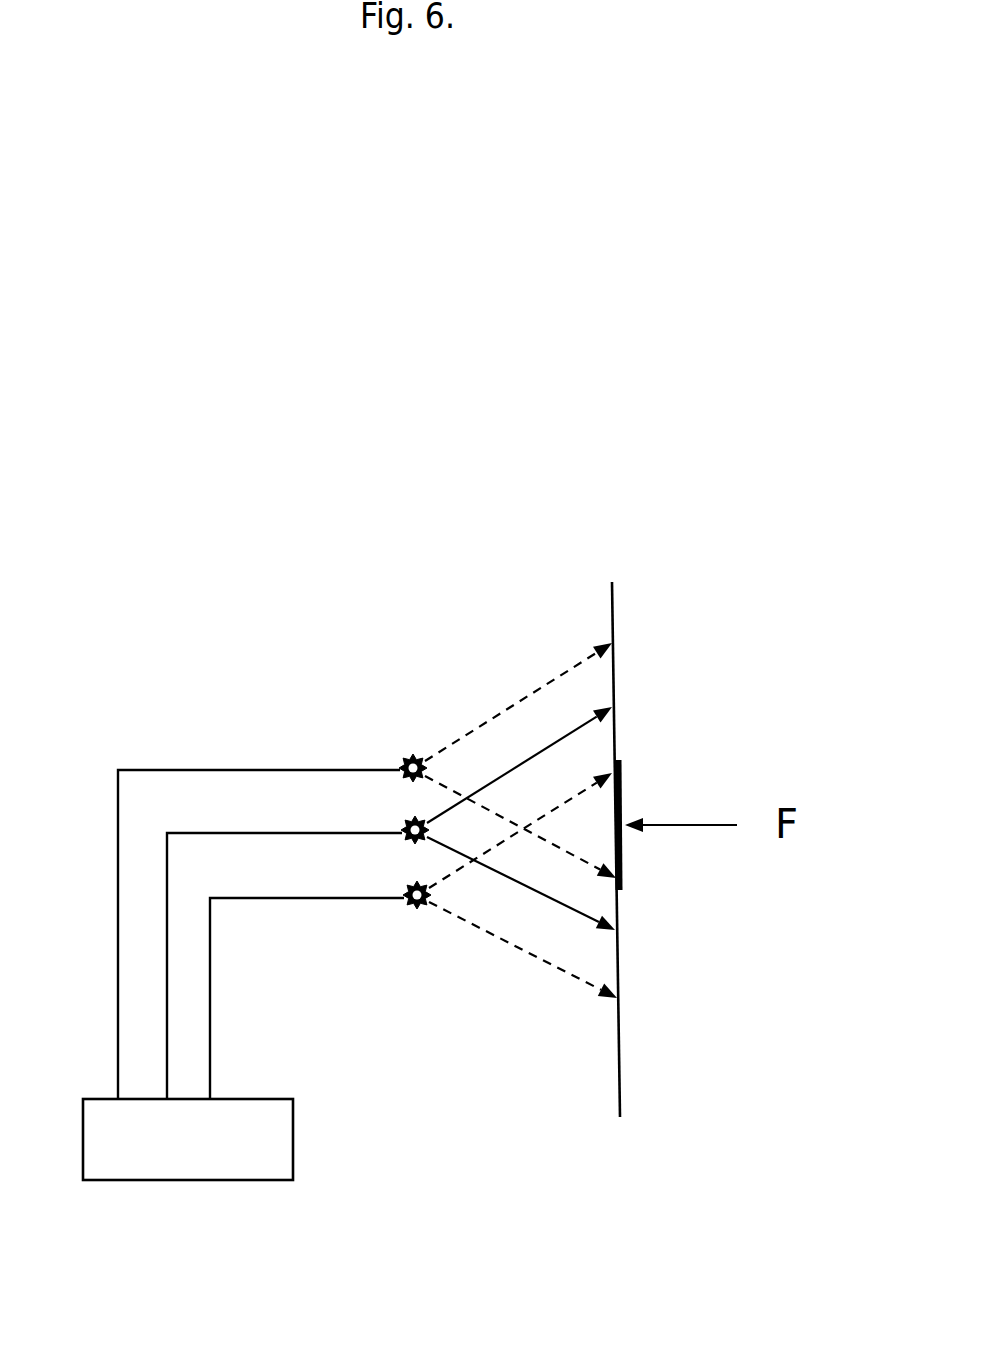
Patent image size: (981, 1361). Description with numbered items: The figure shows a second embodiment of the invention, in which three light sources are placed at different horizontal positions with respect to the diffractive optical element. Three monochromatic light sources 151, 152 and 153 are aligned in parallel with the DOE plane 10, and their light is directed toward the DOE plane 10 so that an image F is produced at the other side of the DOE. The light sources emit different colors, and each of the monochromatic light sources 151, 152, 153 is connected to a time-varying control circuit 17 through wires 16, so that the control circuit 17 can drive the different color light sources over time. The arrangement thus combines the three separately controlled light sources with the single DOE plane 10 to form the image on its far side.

The DOE plane 10 is at (614, 582).
The monochromatic light source 151 is at (413, 740).
The monochromatic light source 152 is at (405, 826).
The monochromatic light source 153 is at (418, 907).
The wires 16 is at (225, 903).
The time-varying control circuit 17 is at (172, 1170).